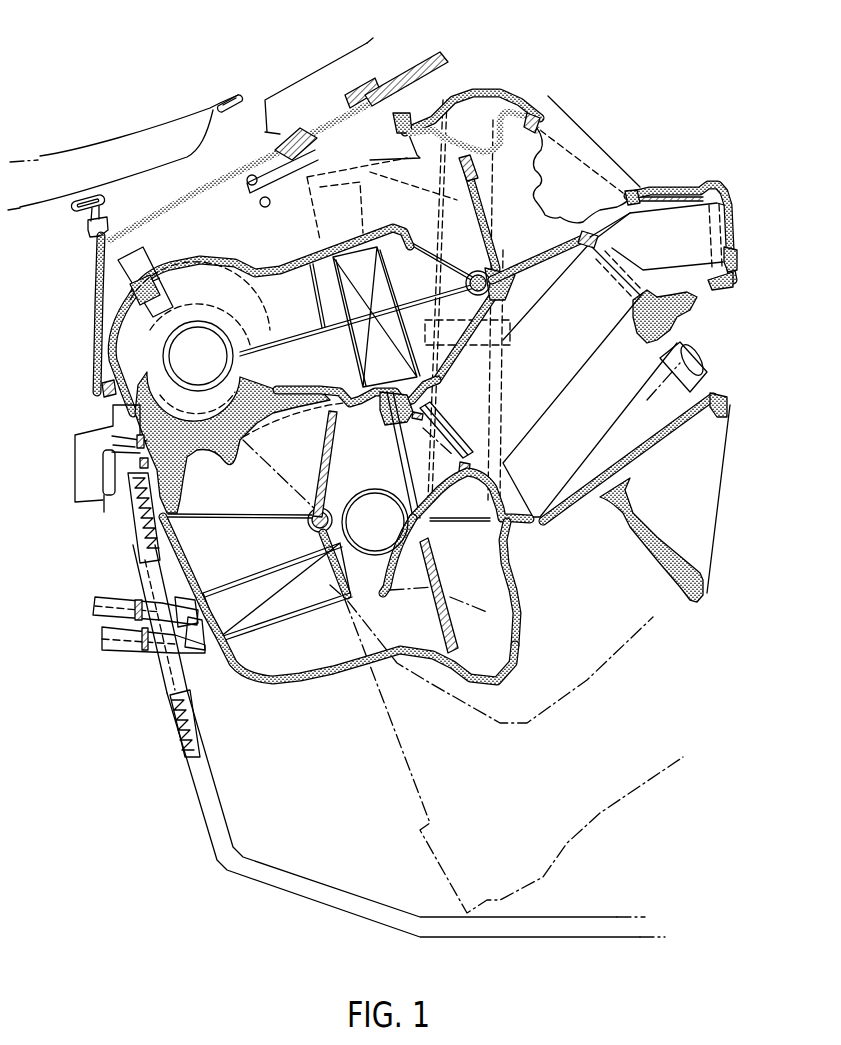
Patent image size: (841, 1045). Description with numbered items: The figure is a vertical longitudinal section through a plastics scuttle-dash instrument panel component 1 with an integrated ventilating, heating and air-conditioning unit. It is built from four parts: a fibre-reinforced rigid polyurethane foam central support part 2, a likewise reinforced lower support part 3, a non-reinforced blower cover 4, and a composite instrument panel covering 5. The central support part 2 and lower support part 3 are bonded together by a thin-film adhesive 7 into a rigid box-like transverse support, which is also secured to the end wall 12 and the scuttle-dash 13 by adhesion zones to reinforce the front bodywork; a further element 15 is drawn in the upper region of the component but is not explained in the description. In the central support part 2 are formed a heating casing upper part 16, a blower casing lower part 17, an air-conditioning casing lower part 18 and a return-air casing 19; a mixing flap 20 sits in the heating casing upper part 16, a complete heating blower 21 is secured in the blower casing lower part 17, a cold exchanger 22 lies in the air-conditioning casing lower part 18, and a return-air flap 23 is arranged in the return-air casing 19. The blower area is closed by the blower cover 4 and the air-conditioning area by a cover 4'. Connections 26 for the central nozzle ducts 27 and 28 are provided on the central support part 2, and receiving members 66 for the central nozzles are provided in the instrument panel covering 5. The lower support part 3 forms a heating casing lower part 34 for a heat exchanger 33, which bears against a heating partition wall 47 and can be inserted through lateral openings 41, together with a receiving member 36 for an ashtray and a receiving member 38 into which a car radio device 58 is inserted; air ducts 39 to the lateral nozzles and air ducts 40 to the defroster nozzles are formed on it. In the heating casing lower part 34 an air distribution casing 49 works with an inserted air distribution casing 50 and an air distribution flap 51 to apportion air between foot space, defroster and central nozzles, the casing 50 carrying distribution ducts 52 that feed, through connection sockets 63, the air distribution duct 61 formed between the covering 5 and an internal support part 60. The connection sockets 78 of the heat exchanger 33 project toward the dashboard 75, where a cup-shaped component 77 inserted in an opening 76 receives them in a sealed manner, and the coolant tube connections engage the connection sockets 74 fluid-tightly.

The scuttle-dash instrument panel component 1 is at (730, 370).
The central support part 2 is at (687, 300).
The lower support part 3 is at (723, 413).
The blower cover 4 is at (363, 245).
The cover 4' is at (357, 199).
The instrument panel covering 5 is at (657, 190).
The adhesive 7 is at (465, 160).
The end wall 12 is at (110, 409).
The scuttle-dash 13 is at (462, 160).
The strut 15 is at (475, 183).
The heating casing upper part 16 is at (180, 483).
The blower casing lower part 17 is at (250, 418).
The air-conditioning casing lower part 18 is at (342, 388).
The return-air casing 19 is at (410, 373).
The mixing flap 20 is at (327, 463).
The heating blower 21 is at (205, 318).
The cold exchanger 22 is at (367, 284).
The return-air flap 23 is at (452, 350).
The connections for central nozzle ducts 26 is at (433, 447).
The central nozzle duct 27 is at (578, 323).
The central nozzle duct 28 is at (703, 222).
The heat exchanger 33 is at (273, 603).
The heating casing lower part 34 is at (303, 680).
The ashtray receiving member 36 is at (680, 527).
The car radio receiving member 38 is at (707, 387).
The air ducts to lateral nozzles 39 is at (382, 534).
The air ducts to defroster nozzles 40 is at (467, 537).
The lateral openings 41 is at (252, 665).
The heating partition wall 47 is at (340, 562).
The air distribution casing 49 is at (487, 590).
The inserted air distribution casing 50 is at (493, 485).
The air distribution flap 51 is at (443, 628).
The distribution ducts 52 is at (437, 392).
The car radio device 58 is at (610, 430).
The internal support part 60 is at (445, 100).
The air distribution duct 61 is at (492, 112).
The connection sockets 63 is at (493, 160).
The receiving members for central nozzles 66 is at (723, 250).
The connection sockets 74 is at (178, 657).
The dashboard 75 is at (210, 805).
The opening 76 is at (130, 530).
The cup-shaped component 77 is at (142, 573).
The connection sockets 78 is at (107, 637).